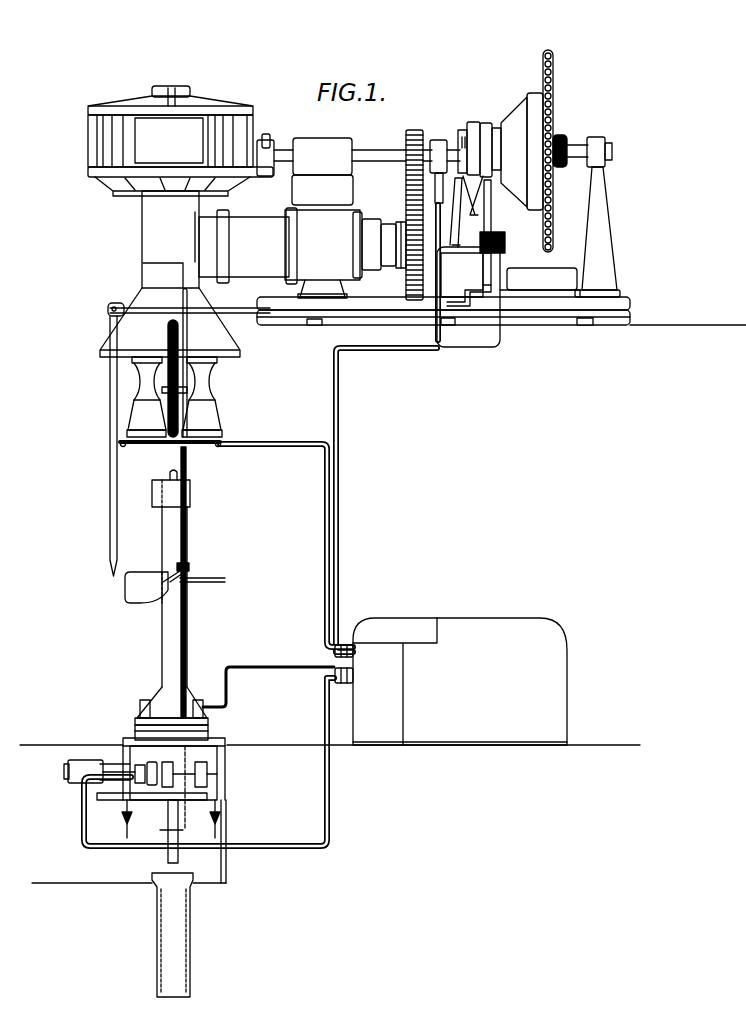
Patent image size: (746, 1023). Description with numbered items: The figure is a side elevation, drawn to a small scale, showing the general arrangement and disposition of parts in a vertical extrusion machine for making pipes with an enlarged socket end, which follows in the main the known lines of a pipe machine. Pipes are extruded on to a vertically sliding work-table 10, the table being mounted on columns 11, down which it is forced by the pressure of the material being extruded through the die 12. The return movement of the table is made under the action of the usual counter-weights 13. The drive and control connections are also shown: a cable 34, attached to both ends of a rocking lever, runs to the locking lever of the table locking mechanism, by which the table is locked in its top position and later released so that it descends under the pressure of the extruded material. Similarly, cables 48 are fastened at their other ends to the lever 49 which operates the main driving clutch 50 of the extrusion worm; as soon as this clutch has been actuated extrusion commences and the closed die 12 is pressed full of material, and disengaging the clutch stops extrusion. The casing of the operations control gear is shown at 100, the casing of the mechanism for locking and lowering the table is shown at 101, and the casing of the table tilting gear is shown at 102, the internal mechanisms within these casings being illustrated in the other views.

The work-table 10 is at (217, 582).
The columns 11 is at (167, 538).
The die 12 is at (194, 448).
The counter-weights 13 is at (152, 494).
The cable 34 is at (295, 668).
The cables 48 is at (497, 334).
The lever 49 is at (480, 212).
The main driving clutch 50 is at (475, 130).
The casing of the operations control gear 100 is at (500, 633).
The casing of mechanism for locking and lowering the table 101 is at (120, 766).
The casing of table tilting gear 102 is at (141, 595).